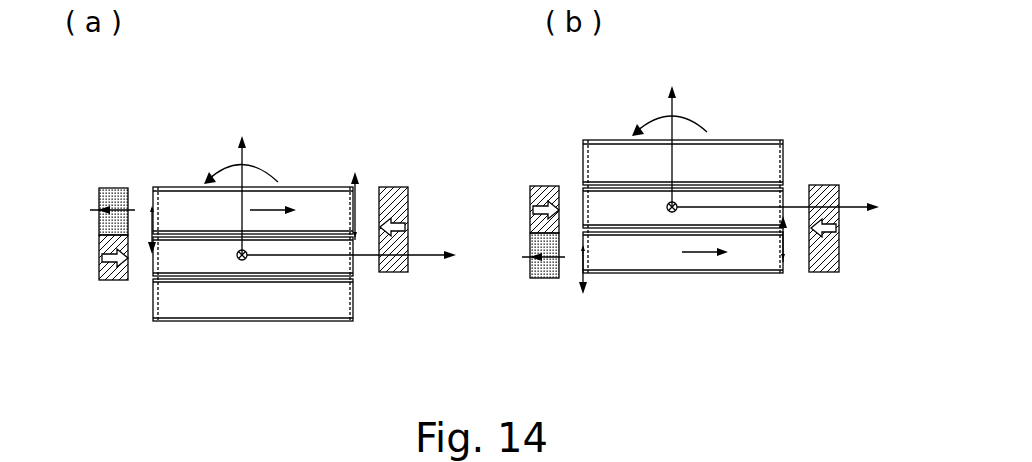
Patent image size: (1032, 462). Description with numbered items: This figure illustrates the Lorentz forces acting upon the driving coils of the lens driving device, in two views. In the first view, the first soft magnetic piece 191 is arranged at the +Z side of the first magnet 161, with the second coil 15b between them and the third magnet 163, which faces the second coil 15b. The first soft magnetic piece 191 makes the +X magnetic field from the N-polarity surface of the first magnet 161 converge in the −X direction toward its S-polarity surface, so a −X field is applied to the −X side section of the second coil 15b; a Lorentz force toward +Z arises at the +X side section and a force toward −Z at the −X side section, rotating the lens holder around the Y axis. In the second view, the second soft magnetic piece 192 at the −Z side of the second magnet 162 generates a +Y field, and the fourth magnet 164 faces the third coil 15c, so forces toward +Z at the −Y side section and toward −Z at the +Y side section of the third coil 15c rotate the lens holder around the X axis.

The first soft magnetic piece 191 is at (112, 193).
The first magnet 161 is at (108, 279).
The second coil 15b is at (283, 196).
The third magnet 163 is at (387, 197).
The second magnet 162 is at (542, 190).
The second soft magnetic piece 192 is at (543, 267).
The third coil 15c is at (673, 263).
The fourth magnet 164 is at (818, 194).